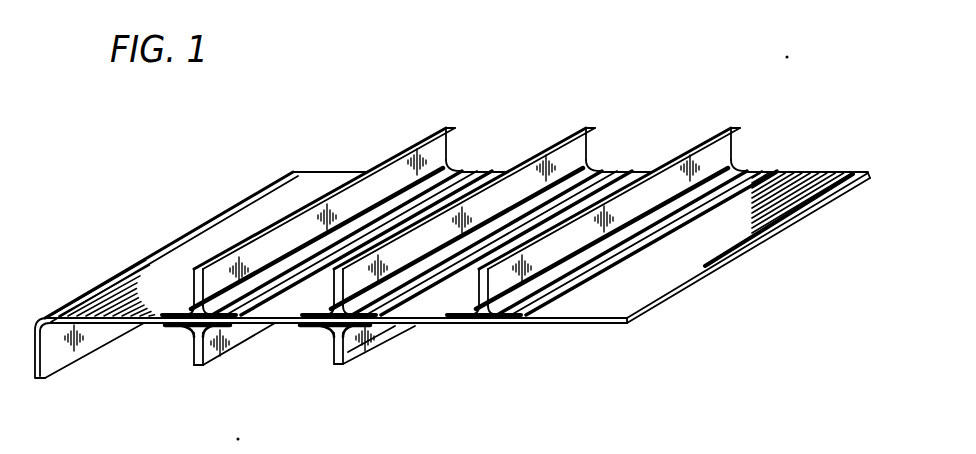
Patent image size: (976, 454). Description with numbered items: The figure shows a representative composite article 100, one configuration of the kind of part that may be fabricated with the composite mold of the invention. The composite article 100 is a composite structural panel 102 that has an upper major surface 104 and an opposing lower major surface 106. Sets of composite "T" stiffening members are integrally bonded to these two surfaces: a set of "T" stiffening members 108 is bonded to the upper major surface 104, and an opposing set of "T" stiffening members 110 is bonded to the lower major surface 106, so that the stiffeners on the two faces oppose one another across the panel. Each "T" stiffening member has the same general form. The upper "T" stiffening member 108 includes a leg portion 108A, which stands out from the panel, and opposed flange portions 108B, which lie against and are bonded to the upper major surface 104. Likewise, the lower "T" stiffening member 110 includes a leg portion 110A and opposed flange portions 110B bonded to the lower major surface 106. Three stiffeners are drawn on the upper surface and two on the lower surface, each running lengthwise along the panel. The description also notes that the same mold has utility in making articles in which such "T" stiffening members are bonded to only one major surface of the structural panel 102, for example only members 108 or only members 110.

The composite article 100 is at (326, 131).
The composite structural panel 102 is at (732, 284).
The upper major surface 104 is at (788, 175).
The lower major surface 106 is at (557, 324).
The T stiffening member 108 is at (463, 143).
The leg portion 108A is at (580, 143).
The flange portions 108B is at (596, 166).
The T stiffening member 110 is at (190, 377).
The leg portion 110A is at (337, 364).
The flange portions 110B is at (314, 328).